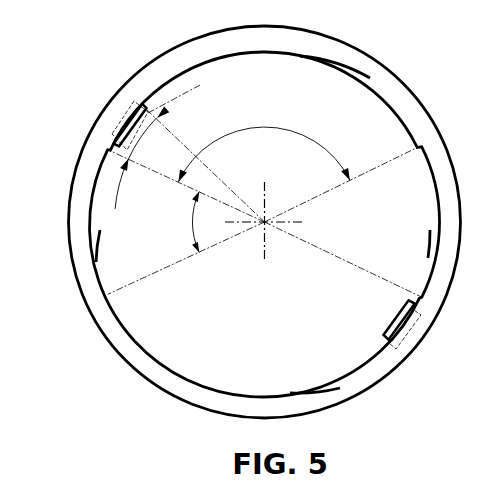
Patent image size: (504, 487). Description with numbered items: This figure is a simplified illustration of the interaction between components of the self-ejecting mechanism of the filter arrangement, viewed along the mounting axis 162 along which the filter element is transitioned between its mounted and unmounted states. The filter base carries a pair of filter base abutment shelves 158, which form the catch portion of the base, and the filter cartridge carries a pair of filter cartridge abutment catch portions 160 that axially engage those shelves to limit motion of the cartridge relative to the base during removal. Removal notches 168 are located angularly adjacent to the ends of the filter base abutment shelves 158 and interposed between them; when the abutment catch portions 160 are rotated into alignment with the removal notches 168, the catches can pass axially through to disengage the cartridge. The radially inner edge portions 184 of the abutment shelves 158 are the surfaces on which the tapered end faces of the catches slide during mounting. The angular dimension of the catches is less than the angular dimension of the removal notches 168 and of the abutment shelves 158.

The filter base abutment shelf 158 is at (234, 42).
The filter cartridge abutment catch portion 160 is at (132, 112).
The mounting axis 162 is at (264, 222).
The removal notch 168 is at (120, 242).
The radially inner edge portion 184 is at (332, 68).